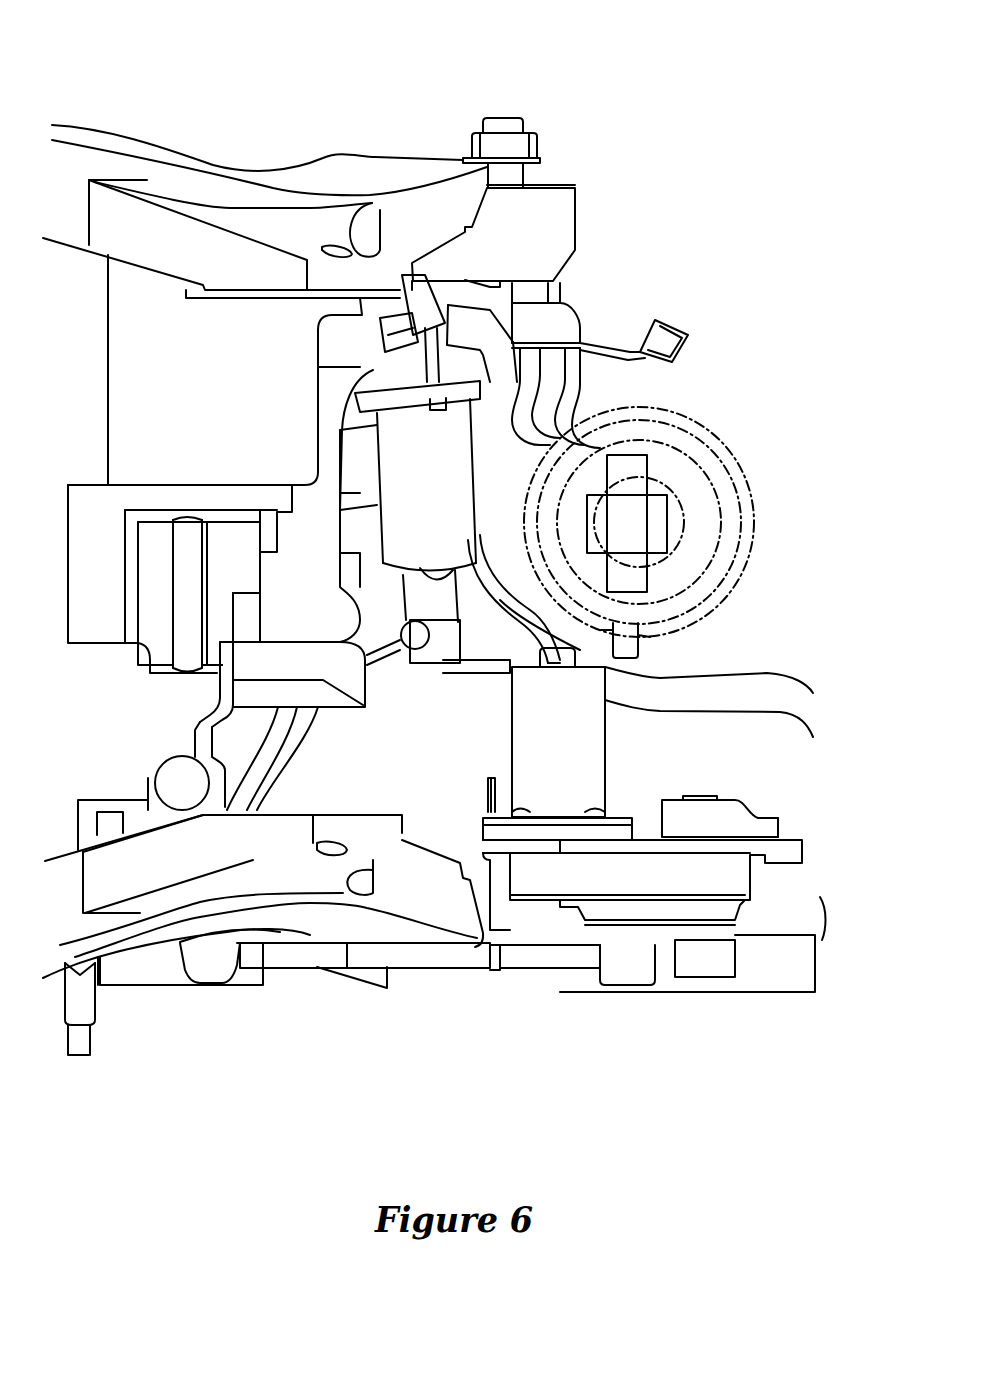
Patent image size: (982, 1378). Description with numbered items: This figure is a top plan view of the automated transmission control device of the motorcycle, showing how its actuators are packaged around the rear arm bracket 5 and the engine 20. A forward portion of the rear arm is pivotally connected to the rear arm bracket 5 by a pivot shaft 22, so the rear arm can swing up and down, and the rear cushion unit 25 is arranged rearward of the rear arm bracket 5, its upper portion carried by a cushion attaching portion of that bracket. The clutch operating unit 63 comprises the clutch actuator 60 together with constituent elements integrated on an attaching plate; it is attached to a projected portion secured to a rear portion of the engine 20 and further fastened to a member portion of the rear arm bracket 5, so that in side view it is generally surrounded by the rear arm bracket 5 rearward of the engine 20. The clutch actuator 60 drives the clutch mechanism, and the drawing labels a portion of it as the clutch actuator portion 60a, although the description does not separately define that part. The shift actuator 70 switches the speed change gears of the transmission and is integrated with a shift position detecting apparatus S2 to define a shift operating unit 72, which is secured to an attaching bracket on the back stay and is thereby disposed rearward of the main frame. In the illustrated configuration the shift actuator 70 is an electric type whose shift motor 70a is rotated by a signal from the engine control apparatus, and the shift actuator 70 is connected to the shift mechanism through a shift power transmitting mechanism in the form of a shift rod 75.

The pivot shaft 22 is at (503, 118).
The rear arm bracket 5 is at (586, 193).
The clutch operating unit 63 is at (490, 327).
The clutch actuator 60 is at (582, 318).
The rear cushion unit 25 is at (708, 440).
The cylinder of lever actuator 60a is at (400, 446).
The shift motor 70a is at (595, 745).
The shift actuator 70 is at (710, 790).
The shift position detecting apparatus S2 is at (758, 822).
The shift operating unit 72 is at (472, 828).
The shift rod 75 is at (405, 968).
The engine 20 is at (125, 992).